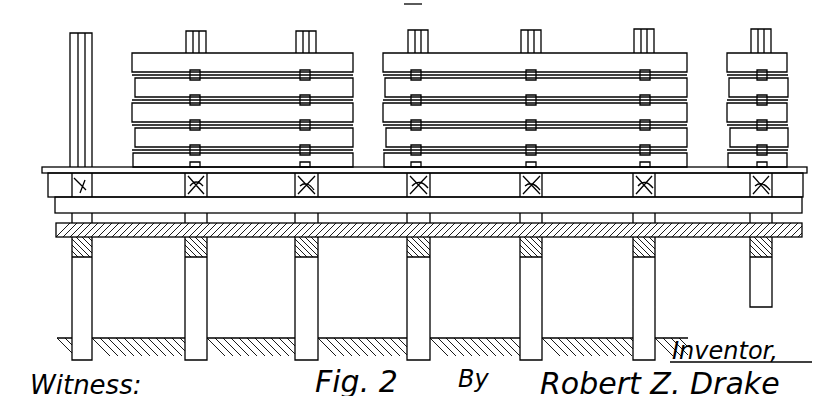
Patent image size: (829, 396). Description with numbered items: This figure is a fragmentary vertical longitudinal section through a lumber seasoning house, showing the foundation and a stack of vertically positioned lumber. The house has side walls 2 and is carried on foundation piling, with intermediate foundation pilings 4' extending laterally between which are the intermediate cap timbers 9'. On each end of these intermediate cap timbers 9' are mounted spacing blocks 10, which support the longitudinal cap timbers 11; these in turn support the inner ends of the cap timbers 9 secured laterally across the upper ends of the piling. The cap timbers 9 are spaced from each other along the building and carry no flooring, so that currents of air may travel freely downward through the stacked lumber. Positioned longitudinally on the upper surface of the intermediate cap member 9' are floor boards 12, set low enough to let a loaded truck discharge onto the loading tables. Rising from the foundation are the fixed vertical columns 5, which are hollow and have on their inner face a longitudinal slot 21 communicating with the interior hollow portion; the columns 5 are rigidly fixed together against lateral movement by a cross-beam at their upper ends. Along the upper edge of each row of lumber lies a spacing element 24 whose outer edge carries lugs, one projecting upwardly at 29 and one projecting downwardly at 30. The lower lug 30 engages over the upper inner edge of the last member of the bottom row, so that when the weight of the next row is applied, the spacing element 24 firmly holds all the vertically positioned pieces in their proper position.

The side walls 2 is at (413, 11).
The fixed vertical columns 5 is at (70, 48).
The longitudinal slot 21 is at (82, 33).
The upwardly projecting lug 29 is at (312, 71).
The spacing element 24 is at (314, 72).
The downwardly projecting lug 30 is at (312, 79).
The cap timbers 9 is at (422, 184).
The longitudinal cap timbers 11 is at (596, 200).
The spacing blocks 10 is at (86, 218).
The intermediate cap timbers 9' is at (422, 257).
The intermediate foundation pilings 4' is at (422, 298).
The floor boards 12 is at (474, 230).